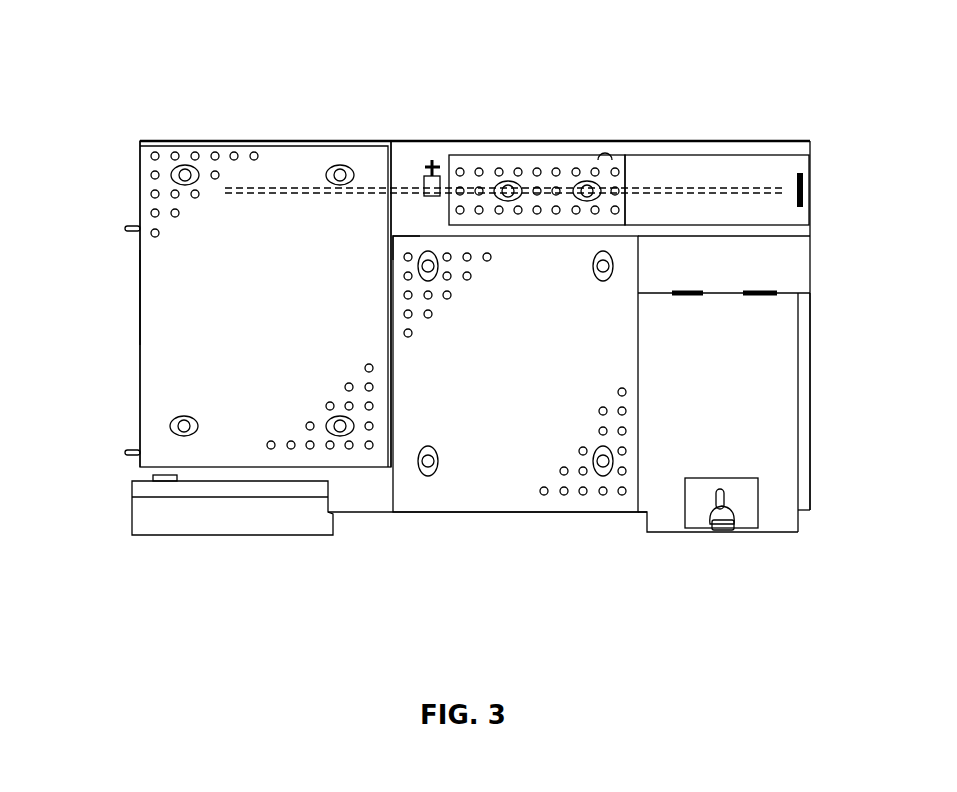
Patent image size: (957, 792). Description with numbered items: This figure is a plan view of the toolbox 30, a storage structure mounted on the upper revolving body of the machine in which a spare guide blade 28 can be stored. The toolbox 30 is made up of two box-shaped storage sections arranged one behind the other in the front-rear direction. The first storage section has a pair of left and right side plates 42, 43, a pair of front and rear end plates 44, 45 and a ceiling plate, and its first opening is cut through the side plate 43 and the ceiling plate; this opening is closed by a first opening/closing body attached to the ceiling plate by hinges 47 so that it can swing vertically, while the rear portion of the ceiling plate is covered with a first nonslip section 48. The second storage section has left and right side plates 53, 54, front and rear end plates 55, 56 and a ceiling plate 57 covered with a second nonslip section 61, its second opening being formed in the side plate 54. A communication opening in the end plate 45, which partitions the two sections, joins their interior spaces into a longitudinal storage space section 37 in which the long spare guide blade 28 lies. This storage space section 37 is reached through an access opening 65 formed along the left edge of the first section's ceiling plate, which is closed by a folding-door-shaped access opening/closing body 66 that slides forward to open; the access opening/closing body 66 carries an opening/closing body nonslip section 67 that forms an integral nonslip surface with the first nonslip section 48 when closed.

The toolbox 30 is at (510, 72).
The left-side plate of second storage section 53 is at (226, 141).
The second nonslip section 61 is at (290, 160).
The front end plate of second storage section 55 is at (393, 158).
The left-side plate of first storage section 42 is at (530, 155).
The opening/closing body nonslip section 67 is at (572, 160).
The access opening 65 is at (601, 160).
The access opening/closing body 66 is at (661, 150).
The storage space section 37 is at (706, 170).
The spare guide blade 28 is at (745, 185).
The hinges 47 is at (690, 293).
The front end plate of first storage section 44 is at (810, 283).
The right-side plate of first storage section 43 is at (578, 512).
The first nonslip section 48 is at (507, 492).
The right-side plate of second storage section 54 is at (373, 495).
The rear end plate of second storage section 56 is at (140, 275).
The ceiling plate of second storage section 57 is at (155, 320).
The rear end plate of first storage section 45 is at (388, 228).